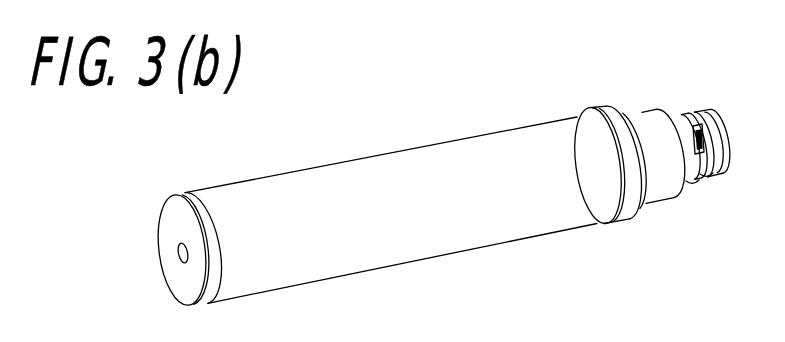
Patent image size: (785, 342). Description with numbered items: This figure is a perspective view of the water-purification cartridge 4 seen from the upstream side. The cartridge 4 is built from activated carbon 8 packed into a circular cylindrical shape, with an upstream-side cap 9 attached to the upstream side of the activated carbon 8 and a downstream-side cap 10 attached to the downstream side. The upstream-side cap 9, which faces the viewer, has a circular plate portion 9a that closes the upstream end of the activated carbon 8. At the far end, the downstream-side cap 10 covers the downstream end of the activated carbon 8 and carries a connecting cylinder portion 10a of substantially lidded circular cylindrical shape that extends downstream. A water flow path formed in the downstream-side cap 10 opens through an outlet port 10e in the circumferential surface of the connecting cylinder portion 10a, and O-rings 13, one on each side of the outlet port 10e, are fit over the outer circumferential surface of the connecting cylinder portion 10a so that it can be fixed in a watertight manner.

The water-purification cartridge 4 is at (454, 90).
The activated carbon 8 is at (413, 238).
The upstream-side cap 9 is at (179, 184).
The circular plate portion 9a is at (173, 257).
The downstream-side cap 10 is at (605, 92).
The connecting cylinder portion 10a is at (695, 118).
The outlet port 10e is at (703, 177).
The O-ring 13 is at (686, 183).